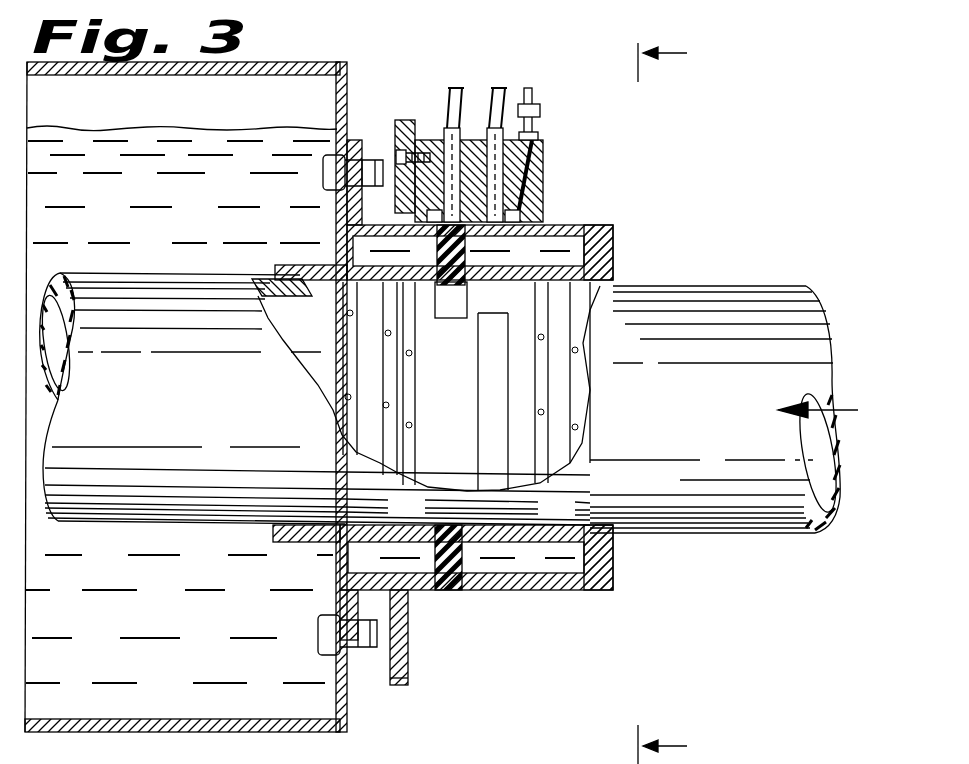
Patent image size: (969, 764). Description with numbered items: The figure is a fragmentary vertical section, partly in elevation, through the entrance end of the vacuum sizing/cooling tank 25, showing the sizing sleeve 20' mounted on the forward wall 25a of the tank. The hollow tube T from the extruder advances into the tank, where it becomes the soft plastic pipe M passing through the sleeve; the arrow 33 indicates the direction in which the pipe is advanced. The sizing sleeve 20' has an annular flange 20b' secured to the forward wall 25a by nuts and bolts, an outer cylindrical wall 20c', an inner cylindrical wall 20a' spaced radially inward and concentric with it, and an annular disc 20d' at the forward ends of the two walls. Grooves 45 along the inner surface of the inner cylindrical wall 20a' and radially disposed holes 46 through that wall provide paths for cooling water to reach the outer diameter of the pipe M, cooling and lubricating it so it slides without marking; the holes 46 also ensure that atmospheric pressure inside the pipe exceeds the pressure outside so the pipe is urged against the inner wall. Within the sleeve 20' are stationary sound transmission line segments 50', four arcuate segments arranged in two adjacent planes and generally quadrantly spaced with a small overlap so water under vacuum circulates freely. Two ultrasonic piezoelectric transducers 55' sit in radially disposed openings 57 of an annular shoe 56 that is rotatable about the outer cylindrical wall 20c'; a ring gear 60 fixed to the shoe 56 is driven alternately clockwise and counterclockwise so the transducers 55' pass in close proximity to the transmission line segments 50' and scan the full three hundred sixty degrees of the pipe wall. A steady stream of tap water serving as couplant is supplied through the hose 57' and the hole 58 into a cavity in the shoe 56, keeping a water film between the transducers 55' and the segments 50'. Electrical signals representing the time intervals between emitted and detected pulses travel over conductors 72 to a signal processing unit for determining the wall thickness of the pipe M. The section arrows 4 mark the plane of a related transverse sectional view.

The vacuum sizing/cooling tank 25 is at (272, 64).
The forward wall 25a is at (346, 70).
The sizing sleeve 20' is at (517, 381).
The inner cylindrical wall 20a' is at (632, 497).
The mounting bracket 20b' is at (384, 349).
The outer cylindrical wall 20c' is at (598, 582).
The upper flange 20d' is at (648, 252).
The grooves 45 is at (345, 410).
The radially disposed holes 46 is at (296, 266).
The sound transmission line segments 50' is at (469, 429).
The transducers 55' is at (501, 150).
The annular shoe 56 is at (546, 160).
The radially disposed openings 57 is at (397, 171).
The hose 57' is at (565, 114).
The hole 58 is at (546, 188).
The ring gear 60 is at (410, 665).
The conductors 72 is at (498, 85).
The arrow 33 is at (850, 410).
The soft plastic pipe M is at (173, 408).
The hollow tube T is at (777, 286).
The section line 4- 4 is at (675, 401).